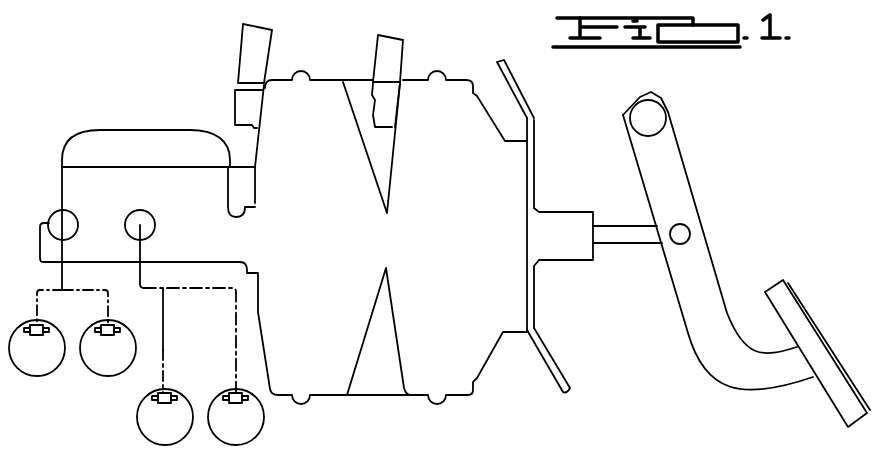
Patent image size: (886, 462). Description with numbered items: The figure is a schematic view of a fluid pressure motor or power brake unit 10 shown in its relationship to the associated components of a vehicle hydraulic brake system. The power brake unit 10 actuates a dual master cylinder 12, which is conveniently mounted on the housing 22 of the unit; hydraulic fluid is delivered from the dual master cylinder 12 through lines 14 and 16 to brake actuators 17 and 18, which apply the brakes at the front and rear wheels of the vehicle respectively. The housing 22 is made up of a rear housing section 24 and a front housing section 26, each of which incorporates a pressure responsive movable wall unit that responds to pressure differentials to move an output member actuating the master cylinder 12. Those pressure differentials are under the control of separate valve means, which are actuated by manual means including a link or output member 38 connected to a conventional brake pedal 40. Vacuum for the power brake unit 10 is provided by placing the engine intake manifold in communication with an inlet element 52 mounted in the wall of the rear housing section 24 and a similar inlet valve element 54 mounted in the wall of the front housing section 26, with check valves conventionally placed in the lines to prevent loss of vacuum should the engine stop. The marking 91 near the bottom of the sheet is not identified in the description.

The power brake unit 10 is at (513, 108).
The dual master cylinder 12 is at (102, 130).
The line 14 is at (146, 243).
The line 16 is at (70, 242).
The brake actuators 17 is at (230, 393).
The brake actuators 18 is at (103, 322).
The housing 22 is at (432, 68).
The rear housing section 24 is at (485, 137).
The front housing section 26 is at (316, 96).
The link or output member 38 is at (627, 235).
The brake pedal 40 is at (708, 277).
The inlet element 52 is at (377, 117).
The inlet valve element 54 is at (245, 102).
The sheet mark 91 is at (321, 450).